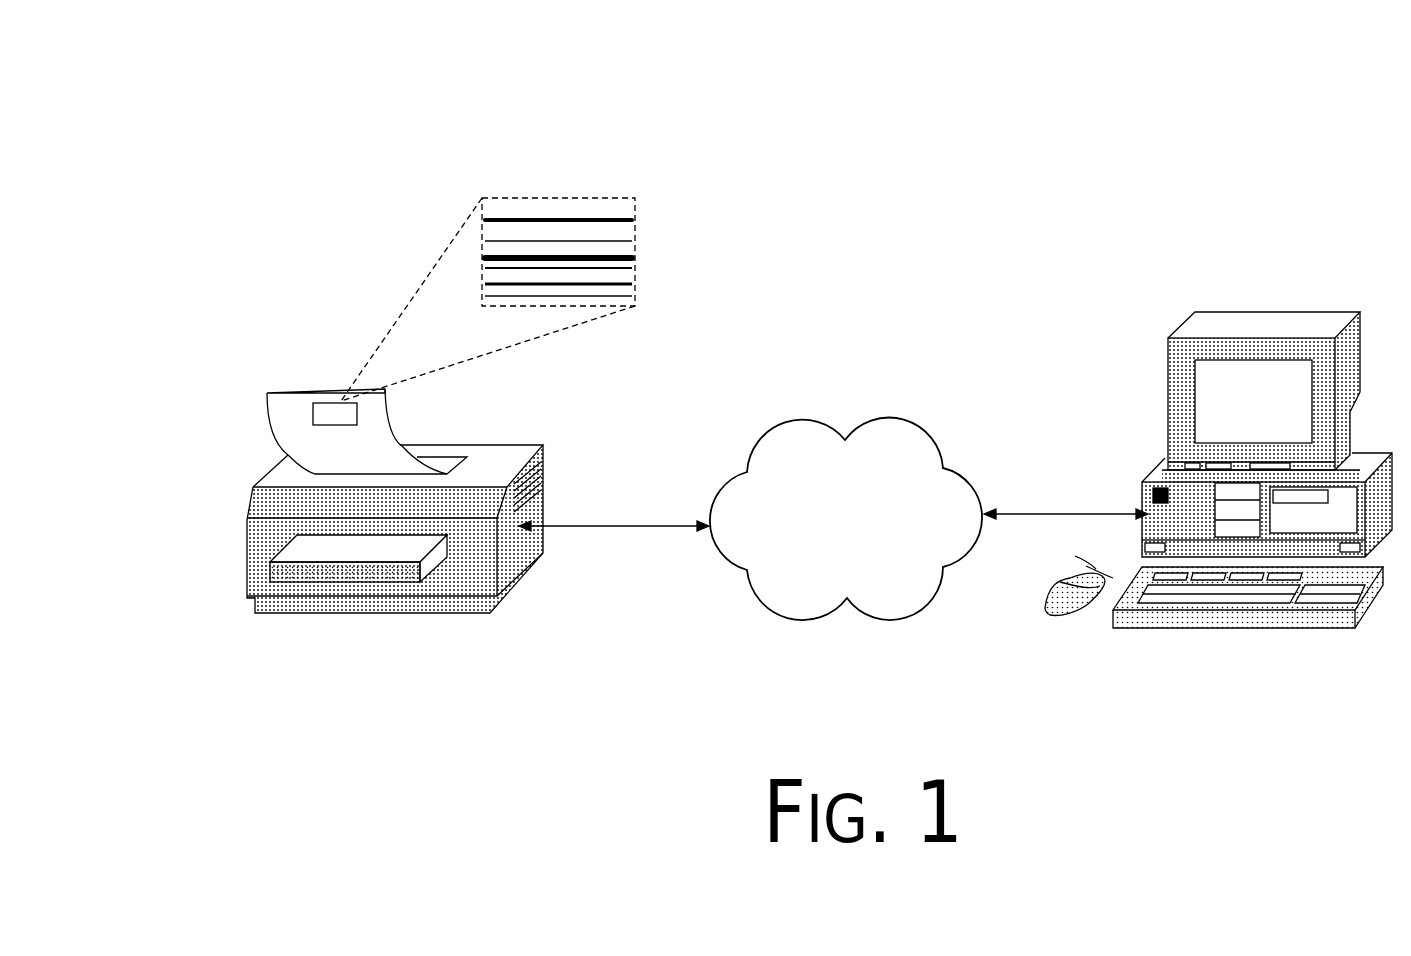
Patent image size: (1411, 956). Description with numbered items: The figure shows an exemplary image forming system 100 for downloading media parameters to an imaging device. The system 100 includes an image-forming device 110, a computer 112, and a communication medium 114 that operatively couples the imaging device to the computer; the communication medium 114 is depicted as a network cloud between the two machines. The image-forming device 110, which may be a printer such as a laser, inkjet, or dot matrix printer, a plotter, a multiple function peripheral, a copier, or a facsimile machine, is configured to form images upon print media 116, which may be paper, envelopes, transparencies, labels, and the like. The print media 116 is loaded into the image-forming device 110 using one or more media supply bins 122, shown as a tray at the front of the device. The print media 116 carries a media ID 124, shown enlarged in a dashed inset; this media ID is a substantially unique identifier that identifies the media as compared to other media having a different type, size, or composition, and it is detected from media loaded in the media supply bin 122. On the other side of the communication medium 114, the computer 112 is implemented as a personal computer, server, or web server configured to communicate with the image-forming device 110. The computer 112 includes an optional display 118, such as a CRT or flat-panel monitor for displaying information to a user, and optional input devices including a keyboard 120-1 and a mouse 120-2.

The system 100 is at (172, 95).
The image-forming device 110 is at (262, 480).
The computer 112 is at (1145, 482).
The communication medium 114 is at (883, 418).
The print media 116 is at (327, 390).
The display 118 is at (1267, 325).
The keyboard 120-1 is at (1238, 628).
The mouse 120-2 is at (1075, 622).
The media supply bin 122 is at (327, 573).
The media ID 124 is at (333, 415).